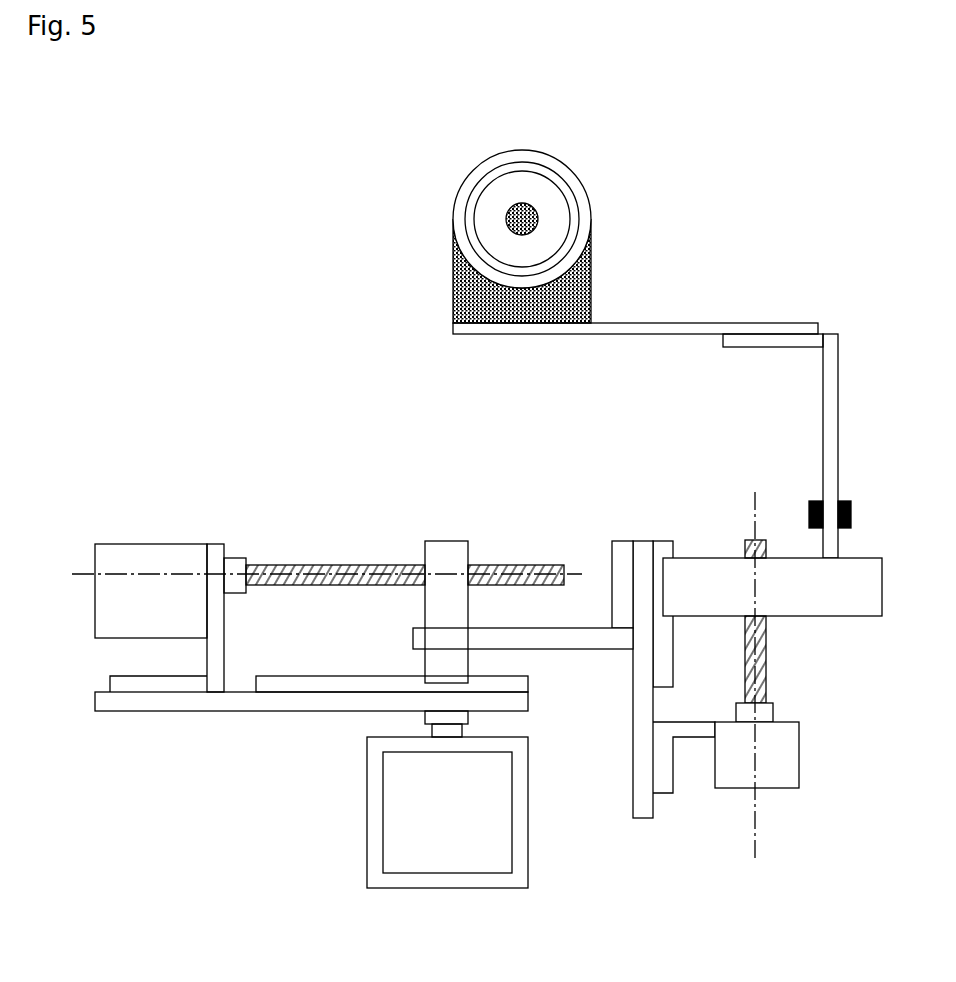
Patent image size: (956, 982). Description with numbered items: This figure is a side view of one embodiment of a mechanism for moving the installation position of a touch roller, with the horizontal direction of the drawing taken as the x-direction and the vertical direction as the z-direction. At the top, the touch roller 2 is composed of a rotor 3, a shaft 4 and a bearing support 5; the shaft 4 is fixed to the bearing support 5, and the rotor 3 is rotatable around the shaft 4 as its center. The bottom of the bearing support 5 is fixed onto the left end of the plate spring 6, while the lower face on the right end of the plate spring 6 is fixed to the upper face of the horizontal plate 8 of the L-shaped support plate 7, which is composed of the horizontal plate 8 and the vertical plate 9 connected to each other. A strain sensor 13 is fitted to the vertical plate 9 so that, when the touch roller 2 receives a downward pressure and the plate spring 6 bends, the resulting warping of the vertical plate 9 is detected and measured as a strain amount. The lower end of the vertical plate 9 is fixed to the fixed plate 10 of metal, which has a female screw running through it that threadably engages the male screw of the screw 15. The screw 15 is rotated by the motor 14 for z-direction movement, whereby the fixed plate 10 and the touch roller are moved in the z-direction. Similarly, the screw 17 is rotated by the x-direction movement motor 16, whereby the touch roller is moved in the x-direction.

The touch roller 2 is at (448, 205).
The rotor 3 is at (575, 192).
The shaft 4 is at (524, 210).
The bearing support 5 is at (452, 290).
The plate spring 6 is at (668, 326).
The L-shaped support plate 7 is at (815, 446).
The horizontal plate 8 is at (773, 340).
The vertical plate 9 is at (830, 415).
The fixed plate 10 is at (868, 602).
The strain sensor 13 is at (850, 500).
The motor for z-direction movement 14 is at (790, 750).
The screw 15 is at (763, 655).
The x-direction movement motor 16 is at (147, 557).
The screw 17 is at (297, 570).